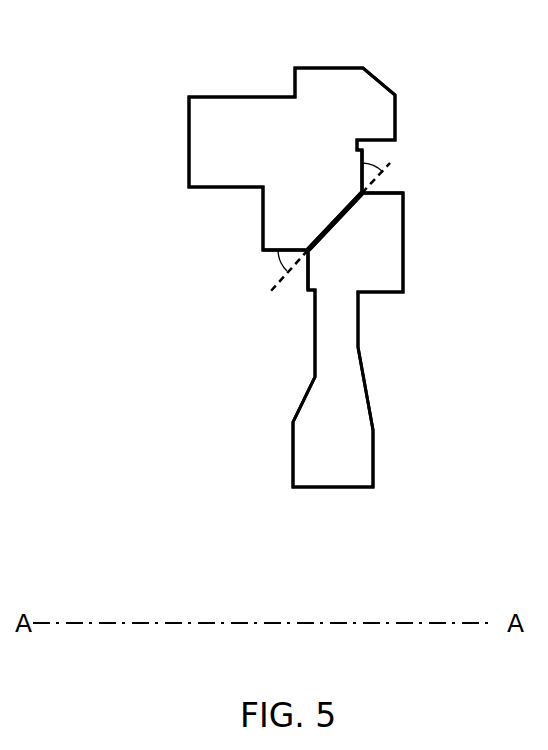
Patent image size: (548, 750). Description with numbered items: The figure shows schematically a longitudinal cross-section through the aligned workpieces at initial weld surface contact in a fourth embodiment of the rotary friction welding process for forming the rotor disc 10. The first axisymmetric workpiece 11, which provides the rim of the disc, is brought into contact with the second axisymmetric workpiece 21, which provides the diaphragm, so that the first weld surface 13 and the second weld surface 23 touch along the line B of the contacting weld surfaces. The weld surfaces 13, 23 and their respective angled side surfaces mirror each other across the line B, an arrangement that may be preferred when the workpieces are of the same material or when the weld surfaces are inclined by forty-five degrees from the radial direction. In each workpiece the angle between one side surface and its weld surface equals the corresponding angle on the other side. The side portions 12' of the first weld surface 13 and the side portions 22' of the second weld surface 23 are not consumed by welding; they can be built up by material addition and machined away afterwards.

The rotor disc 10 is at (212, 143).
The first axisymmetric workpiece 11 is at (301, 155).
The side portions of the first weld surface 12' is at (277, 130).
The first weld surface 13 is at (324, 226).
The second axisymmetric workpiece 21 is at (350, 448).
The side portions of the second weld surface 22' is at (362, 262).
The second weld surface 23 is at (328, 232).
The line of the contacting weld surfaces B is at (391, 163).